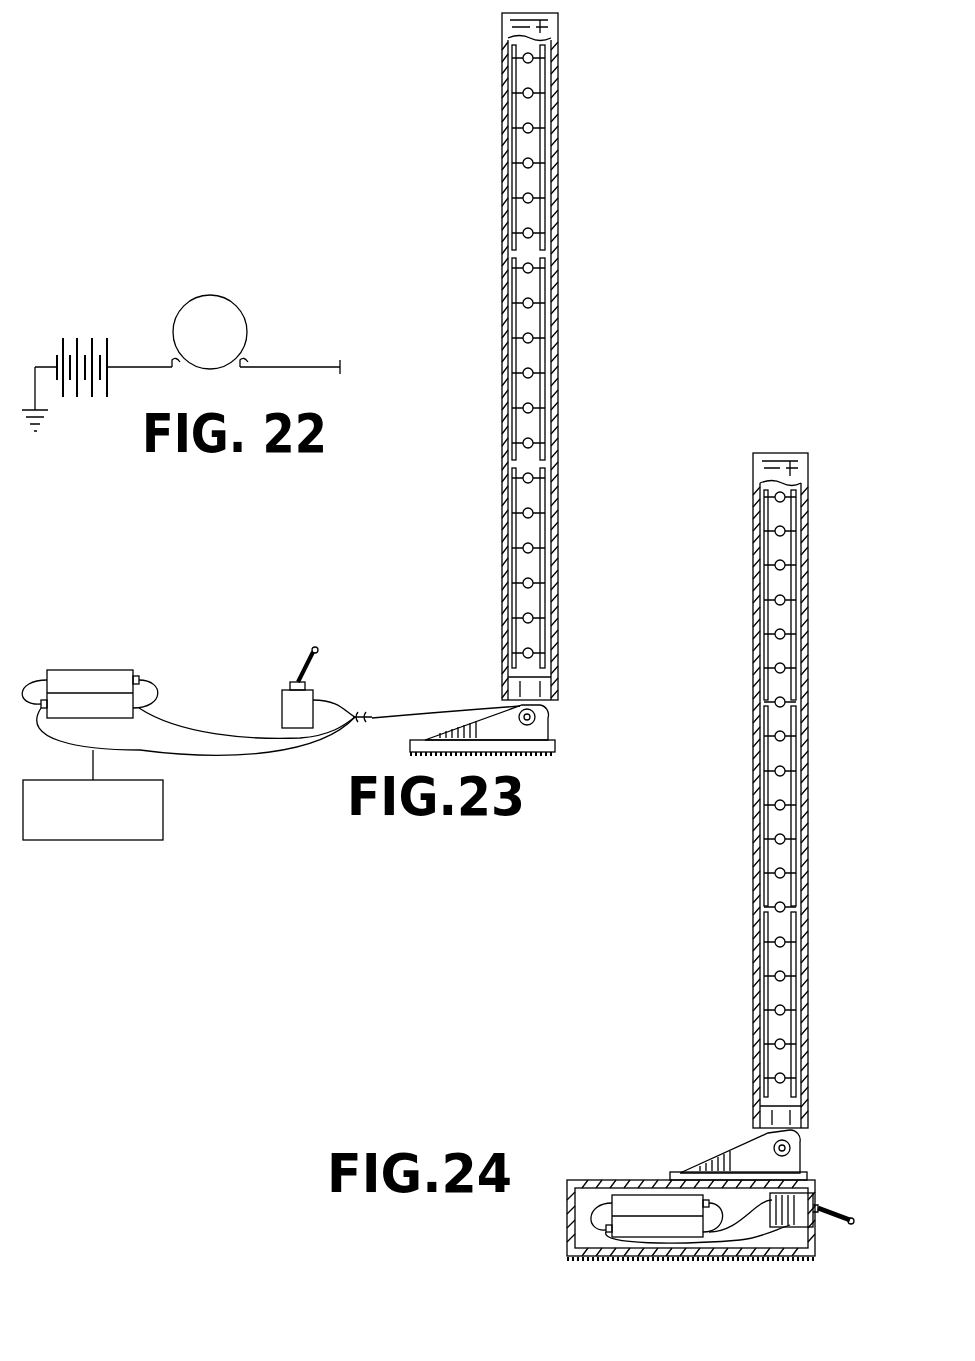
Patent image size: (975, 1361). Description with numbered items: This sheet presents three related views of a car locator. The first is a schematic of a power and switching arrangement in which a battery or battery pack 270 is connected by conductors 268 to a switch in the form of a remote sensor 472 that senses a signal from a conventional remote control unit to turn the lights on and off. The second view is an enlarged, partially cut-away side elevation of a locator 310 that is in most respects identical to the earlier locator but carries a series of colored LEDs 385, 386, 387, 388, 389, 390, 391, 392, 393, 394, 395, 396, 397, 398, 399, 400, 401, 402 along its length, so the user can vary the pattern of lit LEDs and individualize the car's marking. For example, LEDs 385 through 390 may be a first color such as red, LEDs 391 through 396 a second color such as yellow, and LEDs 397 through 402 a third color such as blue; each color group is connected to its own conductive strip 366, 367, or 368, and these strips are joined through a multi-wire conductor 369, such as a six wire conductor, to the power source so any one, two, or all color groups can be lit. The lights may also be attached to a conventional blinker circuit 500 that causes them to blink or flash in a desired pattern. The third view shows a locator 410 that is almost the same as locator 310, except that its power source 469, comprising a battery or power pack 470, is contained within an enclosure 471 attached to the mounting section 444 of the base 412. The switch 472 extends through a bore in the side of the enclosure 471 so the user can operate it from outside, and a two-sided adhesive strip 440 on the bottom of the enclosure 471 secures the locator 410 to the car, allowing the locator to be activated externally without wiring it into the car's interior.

In FIG. 22, the battery or battery pack 270 is at (73, 324).
In FIG. 22, the remote sensor switch 472 is at (218, 296).
In FIG. 24, the remote sensor switch 472 is at (852, 1225).
In FIG. 22, the conductors 268 is at (265, 367).
In FIG. 23, the locator 310 is at (462, 213).
In FIG. 23, the conductive strip 366 is at (512, 143).
In FIG. 23, the conductive strip 367 is at (512, 288).
In FIG. 23, the conductive strip 368 is at (512, 545).
In FIG. 23, the multi-wire conductor 369 is at (417, 717).
In FIG. 23, the LED 385 is at (533, 58).
In FIG. 23, the LED 386 is at (533, 93).
In FIG. 23, the LED 387 is at (533, 128).
In FIG. 23, the LED 388 is at (533, 163).
In FIG. 23, the LED 389 is at (533, 198).
In FIG. 23, the LED 390 is at (533, 233).
In FIG. 23, the LED 391 is at (533, 268).
In FIG. 23, the LED 392 is at (533, 303).
In FIG. 23, the LED 393 is at (533, 338).
In FIG. 23, the LED 394 is at (533, 373).
In FIG. 23, the LED 395 is at (533, 408).
In FIG. 23, the LED 396 is at (533, 443).
In FIG. 23, the LED 397 is at (533, 478).
In FIG. 23, the LED 398 is at (533, 513).
In FIG. 23, the LED 399 is at (533, 548).
In FIG. 23, the LED 400 is at (533, 583).
In FIG. 23, the LED 401 is at (533, 618).
In FIG. 23, the LED 402 is at (533, 653).
In FIG. 23, the blinker circuit 500 is at (157, 793).
In FIG. 24, the locator 410 is at (740, 904).
In FIG. 24, the base 412 is at (812, 1144).
In FIG. 24, the mounting section 444 is at (670, 1174).
In FIG. 24, the power source 469 is at (552, 1219).
In FIG. 24, the battery or power pack 470 is at (652, 1228).
In FIG. 24, the enclosure 471 is at (810, 1190).
In FIG. 24, the two-sided adhesive strip 440 is at (760, 1259).